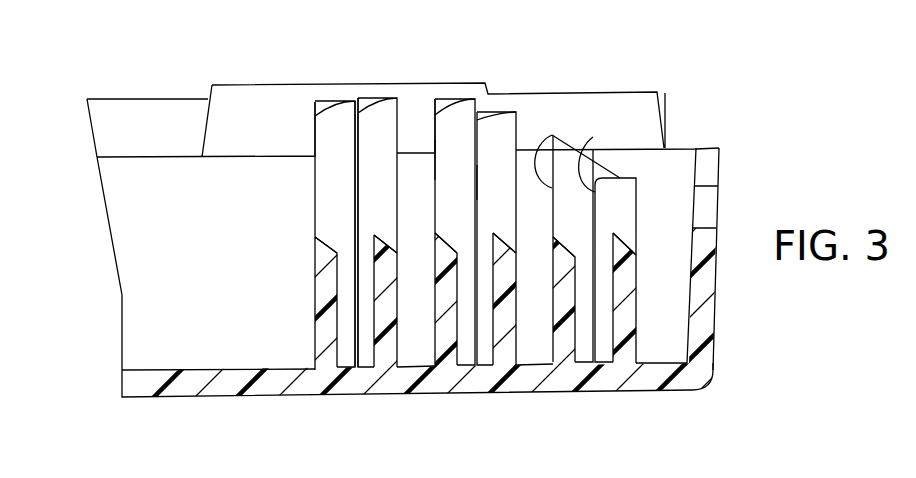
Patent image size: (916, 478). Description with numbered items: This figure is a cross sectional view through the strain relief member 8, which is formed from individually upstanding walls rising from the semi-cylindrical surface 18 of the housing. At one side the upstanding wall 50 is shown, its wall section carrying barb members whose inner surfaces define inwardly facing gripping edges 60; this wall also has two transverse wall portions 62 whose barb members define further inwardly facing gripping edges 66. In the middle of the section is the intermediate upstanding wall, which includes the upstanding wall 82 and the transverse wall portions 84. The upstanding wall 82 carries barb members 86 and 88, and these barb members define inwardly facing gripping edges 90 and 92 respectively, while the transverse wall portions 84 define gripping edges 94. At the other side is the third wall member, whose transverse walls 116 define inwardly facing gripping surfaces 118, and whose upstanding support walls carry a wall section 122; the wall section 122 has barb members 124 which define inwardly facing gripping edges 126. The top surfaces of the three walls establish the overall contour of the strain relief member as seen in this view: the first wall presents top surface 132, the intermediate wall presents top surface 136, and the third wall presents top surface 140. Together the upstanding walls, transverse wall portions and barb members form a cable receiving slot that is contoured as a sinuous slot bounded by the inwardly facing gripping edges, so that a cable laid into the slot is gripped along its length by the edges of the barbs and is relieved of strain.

The strain relief member 8 is at (597, 70).
The semi-cylindrical surface 18 is at (183, 383).
The upstanding wall 50 is at (640, 320).
The inwardly facing gripping edges 60 is at (552, 135).
The transverse wall portions 62 is at (623, 307).
The inwardly facing gripping edges 66 is at (612, 245).
The upstanding wall 82 is at (511, 108).
The transverse wall portions 84 is at (505, 323).
The barb member 86 is at (493, 113).
The barb member 88 is at (459, 117).
The inwardly facing gripping edge 90 is at (476, 192).
The inwardly facing gripping edge 92 is at (438, 175).
The gripping edges 94 is at (492, 242).
The transverse walls 116 is at (388, 320).
The inwardly facing gripping surfaces 118 is at (315, 248).
The wall section 122 is at (378, 96).
The barb members 124 is at (332, 118).
The inwardly facing gripping edges 126 is at (355, 141).
The top surface 132 is at (607, 172).
The top surface 136 is at (447, 118).
The top surface 140 is at (367, 117).